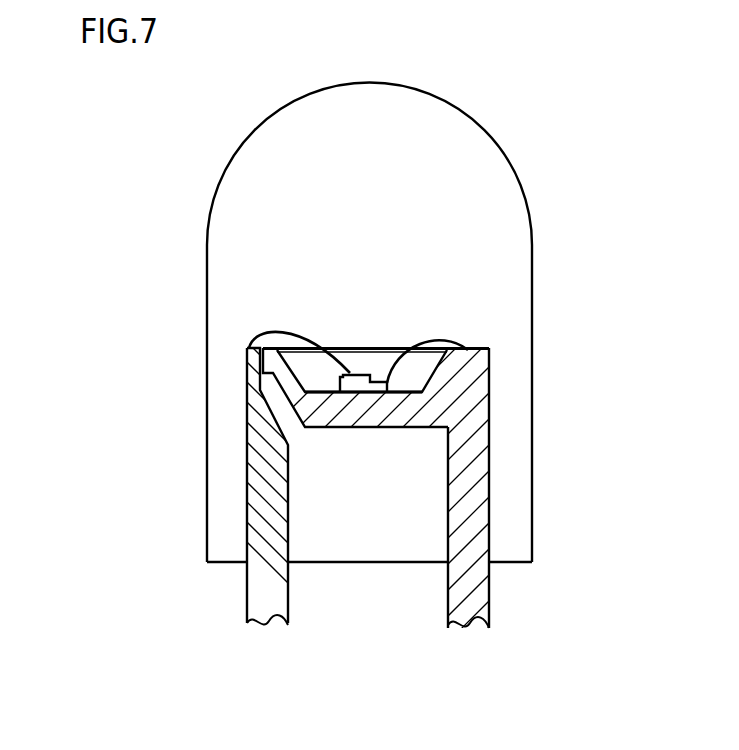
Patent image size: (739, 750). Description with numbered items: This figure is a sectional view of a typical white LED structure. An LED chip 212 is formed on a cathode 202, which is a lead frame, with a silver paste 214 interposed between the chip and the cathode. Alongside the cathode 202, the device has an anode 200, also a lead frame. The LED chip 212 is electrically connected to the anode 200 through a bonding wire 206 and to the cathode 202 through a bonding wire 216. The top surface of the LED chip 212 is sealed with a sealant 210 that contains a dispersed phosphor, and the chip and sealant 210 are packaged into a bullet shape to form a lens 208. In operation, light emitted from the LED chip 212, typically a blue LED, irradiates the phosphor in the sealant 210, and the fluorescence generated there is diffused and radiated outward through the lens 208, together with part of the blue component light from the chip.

The anode 200 is at (258, 592).
The cathode 202 is at (399, 470).
The bonding wire 206 is at (272, 335).
The lens 208 is at (442, 137).
The sealant 210 is at (418, 370).
The LED chip 212 is at (386, 387).
The silver paste 214 is at (363, 393).
The bonding wire 216 is at (450, 340).